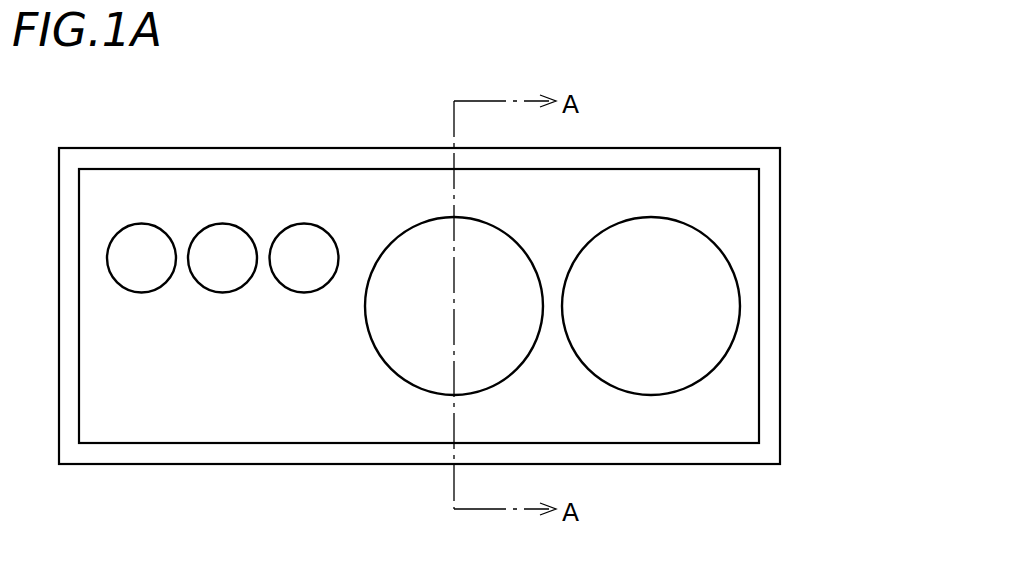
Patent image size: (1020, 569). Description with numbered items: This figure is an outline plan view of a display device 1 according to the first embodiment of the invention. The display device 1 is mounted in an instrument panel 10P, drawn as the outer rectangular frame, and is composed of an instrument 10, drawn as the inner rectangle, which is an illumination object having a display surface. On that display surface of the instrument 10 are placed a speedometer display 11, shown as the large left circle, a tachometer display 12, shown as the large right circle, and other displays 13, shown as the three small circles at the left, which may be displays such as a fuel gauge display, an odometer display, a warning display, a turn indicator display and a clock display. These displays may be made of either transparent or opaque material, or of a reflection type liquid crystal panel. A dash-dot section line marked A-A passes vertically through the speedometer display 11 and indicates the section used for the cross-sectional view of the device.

The display device 1 is at (463, 279).
The instrument 10 is at (748, 208).
The instrument panel 10P is at (710, 148).
The speedometer display 11 is at (419, 379).
The tachometer display 12 is at (681, 379).
The other displays 13 is at (139, 287).